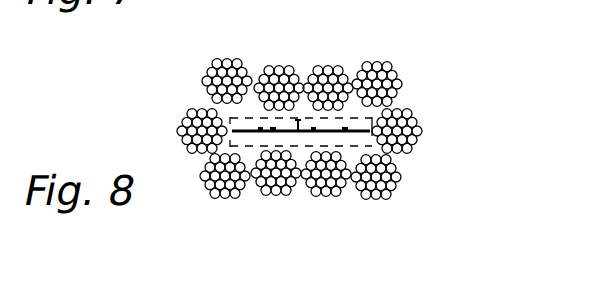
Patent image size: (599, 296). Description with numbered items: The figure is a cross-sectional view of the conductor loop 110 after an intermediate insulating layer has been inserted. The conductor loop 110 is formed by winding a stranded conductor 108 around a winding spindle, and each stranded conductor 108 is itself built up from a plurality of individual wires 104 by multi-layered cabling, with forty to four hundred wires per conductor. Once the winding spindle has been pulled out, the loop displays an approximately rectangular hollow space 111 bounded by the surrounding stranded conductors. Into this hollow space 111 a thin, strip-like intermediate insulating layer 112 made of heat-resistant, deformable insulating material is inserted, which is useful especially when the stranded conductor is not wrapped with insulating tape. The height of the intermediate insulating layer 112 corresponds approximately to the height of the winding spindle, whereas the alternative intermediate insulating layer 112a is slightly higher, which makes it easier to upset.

The individual wire 104 is at (405, 232).
The stranded conductor 108 is at (387, 82).
The conductor loop 110 is at (348, 136).
The hollow space 111 is at (291, 136).
The intermediate insulating layer 112 is at (272, 125).
The intermediate insulating layer 112a is at (337, 30).